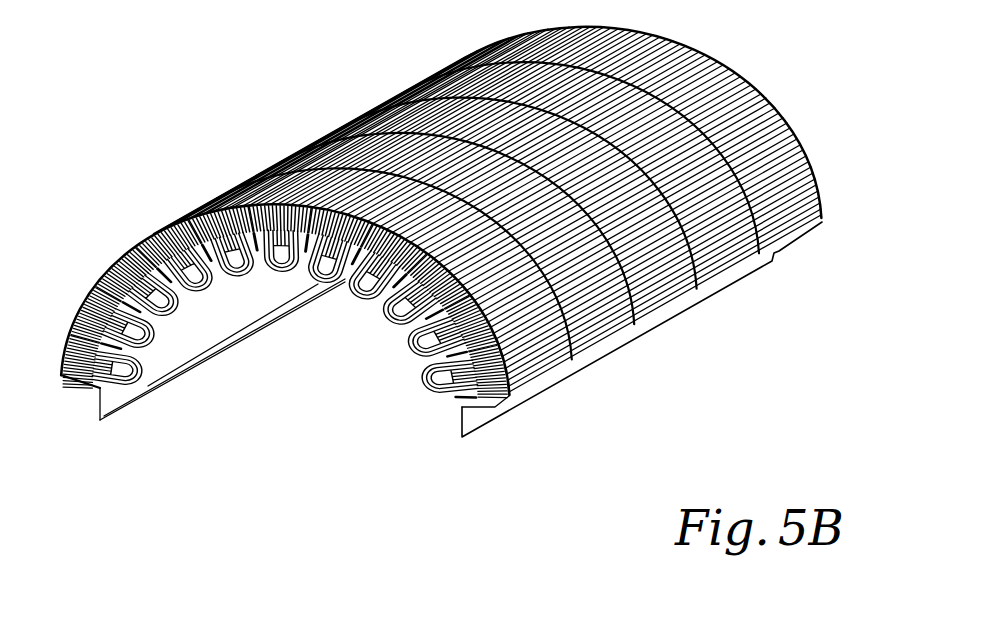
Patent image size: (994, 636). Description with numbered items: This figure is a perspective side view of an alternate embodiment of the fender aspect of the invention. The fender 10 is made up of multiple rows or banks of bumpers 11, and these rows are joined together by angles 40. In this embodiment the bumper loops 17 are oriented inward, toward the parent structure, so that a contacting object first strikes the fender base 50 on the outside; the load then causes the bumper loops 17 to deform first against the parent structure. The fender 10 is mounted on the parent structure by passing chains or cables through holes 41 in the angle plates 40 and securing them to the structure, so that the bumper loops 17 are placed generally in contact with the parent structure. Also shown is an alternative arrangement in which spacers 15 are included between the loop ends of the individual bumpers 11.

The fender base 50 is at (441, 276).
The angle 40 is at (613, 353).
The hole 41 is at (483, 423).
The spacer 15 is at (535, 396).
The bumper loop 17 is at (250, 322).
The bumper 11 is at (187, 358).
The fender 10 is at (317, 337).